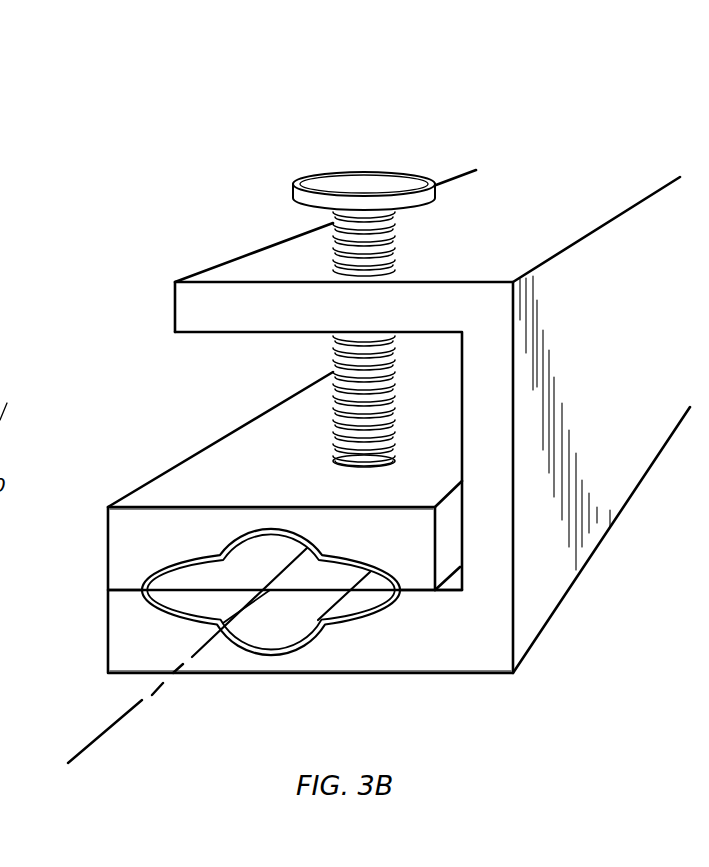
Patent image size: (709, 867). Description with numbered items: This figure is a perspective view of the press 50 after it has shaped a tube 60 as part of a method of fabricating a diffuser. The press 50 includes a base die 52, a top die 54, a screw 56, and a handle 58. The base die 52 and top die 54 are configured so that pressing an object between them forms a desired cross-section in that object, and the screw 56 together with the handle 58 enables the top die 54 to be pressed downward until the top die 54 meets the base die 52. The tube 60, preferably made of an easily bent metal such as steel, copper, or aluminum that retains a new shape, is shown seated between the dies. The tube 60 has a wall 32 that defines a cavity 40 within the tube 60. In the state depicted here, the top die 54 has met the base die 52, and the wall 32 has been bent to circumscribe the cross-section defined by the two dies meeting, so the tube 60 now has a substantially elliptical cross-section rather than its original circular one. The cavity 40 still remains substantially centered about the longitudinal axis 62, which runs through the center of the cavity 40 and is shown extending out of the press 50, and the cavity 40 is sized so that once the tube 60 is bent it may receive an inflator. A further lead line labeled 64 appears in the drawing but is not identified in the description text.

The wall 32 is at (150, 572).
The cavity 40 is at (267, 560).
The press 50 is at (618, 470).
The base die 52 is at (237, 663).
The top die 54 is at (146, 525).
The screw 56 is at (330, 350).
The handle 58 is at (293, 192).
The tube 60 is at (312, 640).
The longitudinal axis 62 is at (113, 720).
The rod face 64 is at (370, 598).